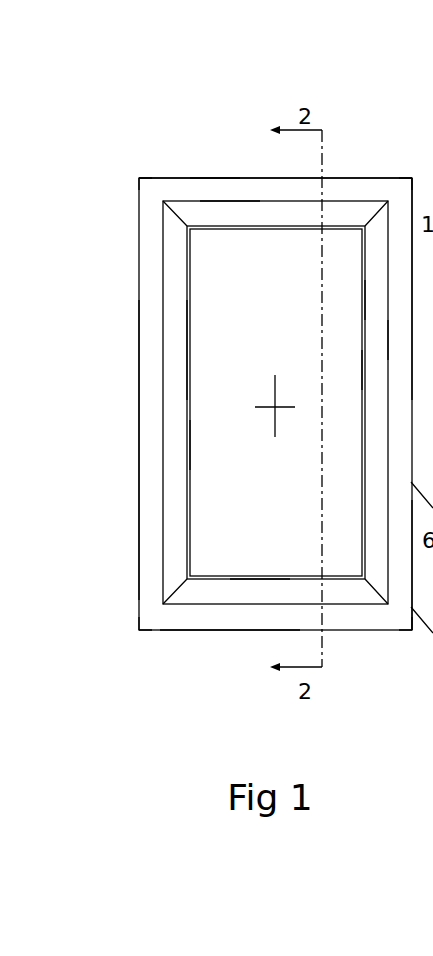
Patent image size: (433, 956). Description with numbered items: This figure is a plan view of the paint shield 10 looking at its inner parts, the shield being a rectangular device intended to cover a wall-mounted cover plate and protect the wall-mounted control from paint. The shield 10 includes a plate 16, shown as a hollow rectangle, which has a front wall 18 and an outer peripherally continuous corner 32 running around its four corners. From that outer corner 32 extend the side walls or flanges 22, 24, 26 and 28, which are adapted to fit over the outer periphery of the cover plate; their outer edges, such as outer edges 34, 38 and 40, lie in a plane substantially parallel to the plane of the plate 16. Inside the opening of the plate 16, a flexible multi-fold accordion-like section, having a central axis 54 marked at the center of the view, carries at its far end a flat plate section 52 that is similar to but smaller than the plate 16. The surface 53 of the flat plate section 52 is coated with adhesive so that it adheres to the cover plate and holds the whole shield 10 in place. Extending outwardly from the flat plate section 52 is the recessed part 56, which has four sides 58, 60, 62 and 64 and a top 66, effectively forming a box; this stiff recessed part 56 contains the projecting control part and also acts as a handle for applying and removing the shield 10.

The paint shield 10 is at (191, 172).
The plate 16 is at (214, 171).
The front wall 18 is at (238, 190).
The side wall or flange 22 is at (348, 178).
The side wall or flange 24 is at (432, 745).
The side wall or flange 26 is at (250, 630).
The side wall or flange 28 is at (138, 525).
The outer peripherally continuous corner 32 is at (140, 177).
The outer edge 34 is at (160, 178).
The outer edge 38 is at (195, 630).
The outer edge 40 is at (139, 395).
The flat plate section 52 is at (377, 300).
The surface 53 is at (377, 338).
The central axis 54 is at (277, 405).
The recessed part 56 is at (182, 347).
The side 58 is at (275, 226).
The side 60 is at (362, 367).
The side 62 is at (257, 577).
The side 64 is at (190, 440).
The top 66 is at (232, 484).